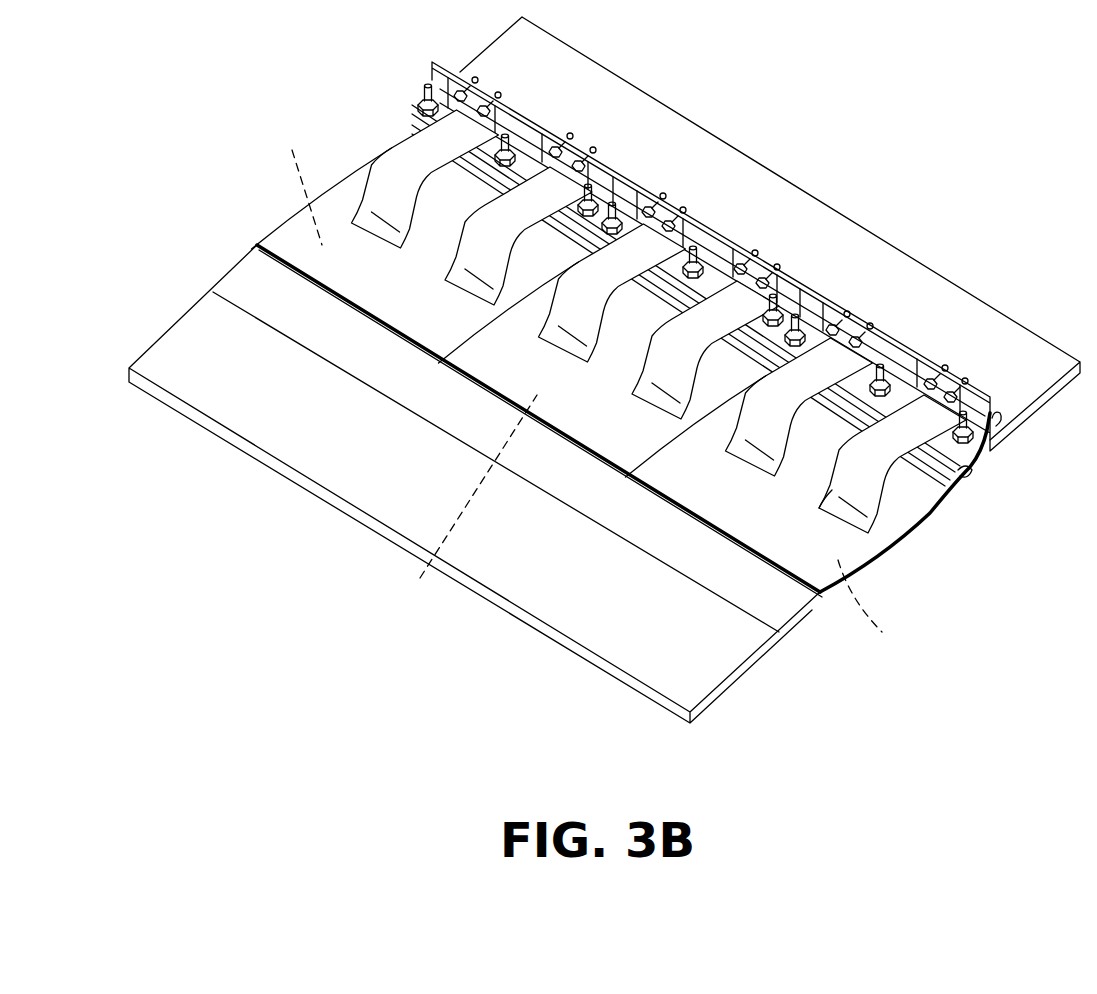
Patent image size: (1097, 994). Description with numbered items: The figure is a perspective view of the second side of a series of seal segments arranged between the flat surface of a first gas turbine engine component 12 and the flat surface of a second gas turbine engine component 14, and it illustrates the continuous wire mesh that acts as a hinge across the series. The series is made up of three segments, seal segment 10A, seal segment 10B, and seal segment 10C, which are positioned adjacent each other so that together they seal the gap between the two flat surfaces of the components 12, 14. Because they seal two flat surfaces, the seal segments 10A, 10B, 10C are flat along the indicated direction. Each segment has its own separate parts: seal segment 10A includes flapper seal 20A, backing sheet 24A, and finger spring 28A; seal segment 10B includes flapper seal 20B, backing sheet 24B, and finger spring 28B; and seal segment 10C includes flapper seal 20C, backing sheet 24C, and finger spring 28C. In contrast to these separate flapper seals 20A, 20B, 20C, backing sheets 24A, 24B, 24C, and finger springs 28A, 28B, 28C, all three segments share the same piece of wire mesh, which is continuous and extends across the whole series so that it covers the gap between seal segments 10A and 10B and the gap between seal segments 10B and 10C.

The seal segment 10A is at (907, 540).
The seal segment 10B is at (493, 452).
The seal segment 10C is at (353, 160).
The first gas turbine engine component 12 is at (740, 197).
The second gas turbine engine component 14 is at (245, 400).
The flapper seal 20A is at (819, 563).
The flapper seal 20B is at (487, 375).
The flapper seal 20C is at (290, 253).
The backing sheet 24A is at (866, 482).
The backing sheet 24B is at (557, 405).
The backing sheet 24C is at (350, 248).
The finger spring 28A is at (882, 512).
The finger spring 28B is at (596, 318).
The finger spring 28C is at (380, 200).